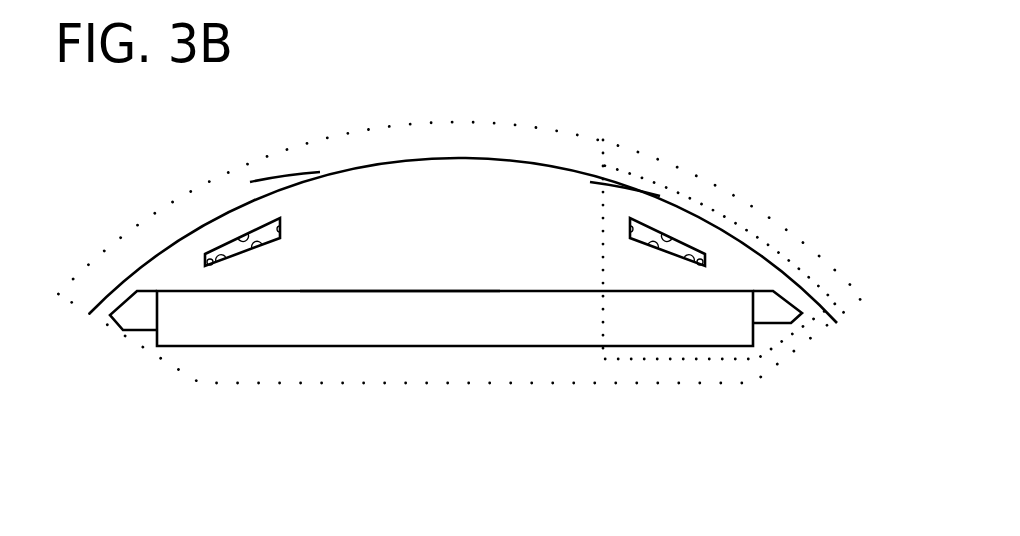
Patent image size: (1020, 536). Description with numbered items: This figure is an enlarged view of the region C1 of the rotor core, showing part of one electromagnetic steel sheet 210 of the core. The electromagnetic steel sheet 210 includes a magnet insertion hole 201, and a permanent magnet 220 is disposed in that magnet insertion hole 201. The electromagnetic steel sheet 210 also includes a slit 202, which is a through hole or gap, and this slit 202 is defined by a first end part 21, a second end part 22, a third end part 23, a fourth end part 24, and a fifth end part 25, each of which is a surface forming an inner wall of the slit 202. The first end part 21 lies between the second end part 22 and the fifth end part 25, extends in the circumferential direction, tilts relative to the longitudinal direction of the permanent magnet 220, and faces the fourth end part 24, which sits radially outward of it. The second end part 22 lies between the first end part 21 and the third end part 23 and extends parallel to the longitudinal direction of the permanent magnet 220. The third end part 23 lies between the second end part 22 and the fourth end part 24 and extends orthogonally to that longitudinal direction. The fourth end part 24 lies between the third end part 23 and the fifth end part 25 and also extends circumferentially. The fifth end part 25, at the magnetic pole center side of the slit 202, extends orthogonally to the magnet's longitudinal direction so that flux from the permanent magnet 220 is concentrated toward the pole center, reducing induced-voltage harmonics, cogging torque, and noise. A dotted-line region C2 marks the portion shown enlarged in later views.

The electromagnetic steel sheet 210 is at (363, 167).
The slit 202 is at (287, 208).
The region C1 is at (459, 120).
The region C2 is at (727, 213).
The magnet insertion hole 201 is at (462, 290).
The permanent magnet 220 is at (393, 310).
The first end part 21 is at (257, 247).
The second end part 22 is at (223, 266).
The third end part 23 is at (207, 264).
The fourth end part 24 is at (243, 236).
The fifth end part 25 is at (282, 231).